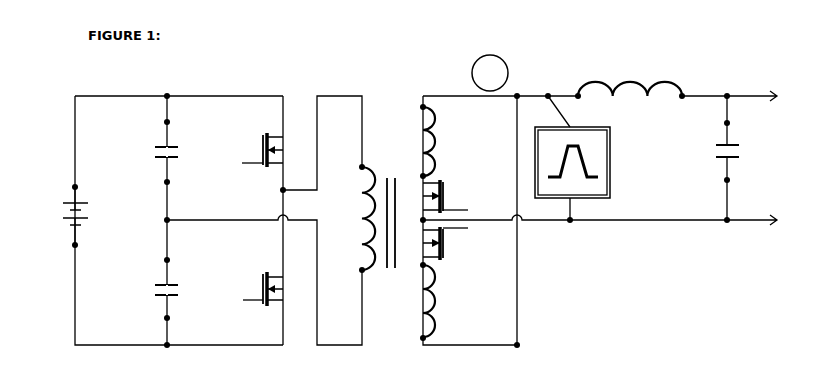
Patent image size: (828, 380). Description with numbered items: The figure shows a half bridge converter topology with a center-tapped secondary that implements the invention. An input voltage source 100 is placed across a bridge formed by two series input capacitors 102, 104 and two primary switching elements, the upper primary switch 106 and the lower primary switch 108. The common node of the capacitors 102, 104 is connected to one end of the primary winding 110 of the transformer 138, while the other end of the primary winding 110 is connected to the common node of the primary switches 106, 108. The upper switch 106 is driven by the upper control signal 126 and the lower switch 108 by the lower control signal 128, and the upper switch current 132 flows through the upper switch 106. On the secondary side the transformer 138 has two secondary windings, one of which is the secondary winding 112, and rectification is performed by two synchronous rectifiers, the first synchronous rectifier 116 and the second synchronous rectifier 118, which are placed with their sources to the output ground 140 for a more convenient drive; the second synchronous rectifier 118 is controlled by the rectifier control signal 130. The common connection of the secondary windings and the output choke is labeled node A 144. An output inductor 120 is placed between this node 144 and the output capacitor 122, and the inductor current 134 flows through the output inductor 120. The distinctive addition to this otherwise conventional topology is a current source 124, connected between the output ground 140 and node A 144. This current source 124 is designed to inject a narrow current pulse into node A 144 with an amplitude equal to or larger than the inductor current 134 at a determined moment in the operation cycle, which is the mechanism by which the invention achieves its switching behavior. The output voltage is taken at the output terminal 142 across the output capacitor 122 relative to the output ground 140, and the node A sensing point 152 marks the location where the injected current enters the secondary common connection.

The input voltage source 100 is at (63, 207).
The input capacitor 102 is at (155, 150).
The input capacitor 104 is at (155, 288).
The upper primary switch Q1 106 is at (256, 152).
The lower primary switch Q2 108 is at (258, 293).
The primary winding 110 is at (362, 223).
The secondary winding 112 is at (440, 132).
The synchronous rectifier SR1 116 is at (457, 203).
The synchronous rectifier SR2 118 is at (457, 244).
The output inductor Lo 120 is at (627, 72).
The output capacitor 122 is at (717, 142).
The current source Iinj 124 is at (615, 183).
The control signal VcQ1 126 is at (216, 173).
The control signal VcQ2 128 is at (217, 304).
The control signal VcSR2 130 is at (508, 214).
The current IQ1 132 is at (508, 233).
The current I(Lo) 134 is at (440, 297).
The transformer Tr 138 is at (388, 130).
The output ground 140 is at (737, 223).
The output voltage terminal Vo 142 is at (733, 98).
The node A 144 is at (518, 93).
The current sensor A 152 is at (500, 57).